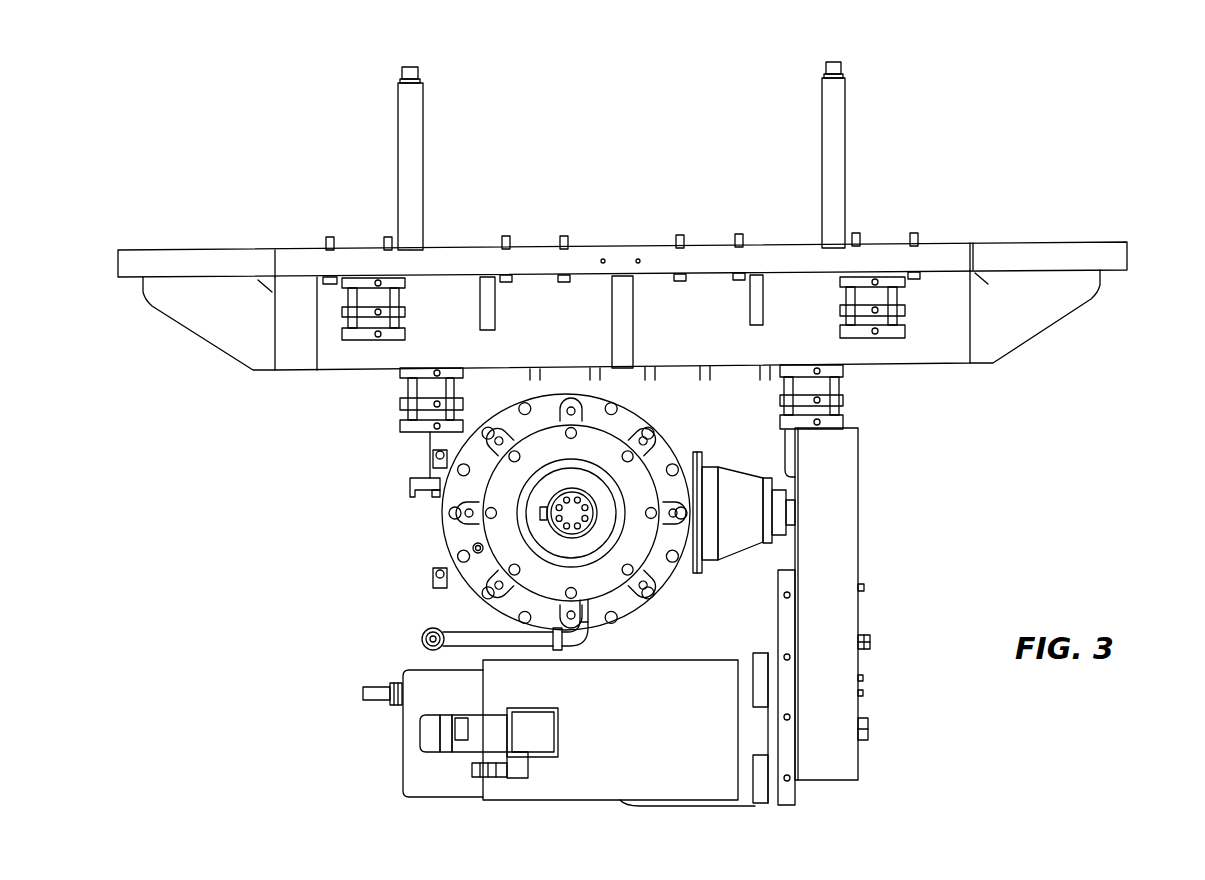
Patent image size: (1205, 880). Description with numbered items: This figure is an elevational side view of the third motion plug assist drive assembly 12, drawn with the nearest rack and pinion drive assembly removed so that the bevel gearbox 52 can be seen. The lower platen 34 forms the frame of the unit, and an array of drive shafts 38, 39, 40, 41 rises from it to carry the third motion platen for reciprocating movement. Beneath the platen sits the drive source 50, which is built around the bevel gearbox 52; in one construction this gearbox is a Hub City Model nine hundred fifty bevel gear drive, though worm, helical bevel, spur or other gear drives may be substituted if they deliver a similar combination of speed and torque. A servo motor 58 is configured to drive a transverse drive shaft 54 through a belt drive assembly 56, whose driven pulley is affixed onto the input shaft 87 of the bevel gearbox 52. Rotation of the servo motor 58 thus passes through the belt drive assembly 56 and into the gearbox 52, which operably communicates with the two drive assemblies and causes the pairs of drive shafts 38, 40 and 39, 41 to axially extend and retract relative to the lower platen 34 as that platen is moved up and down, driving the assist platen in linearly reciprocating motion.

The plug assist drive assembly 12 is at (1135, 123).
The lower platen 34 is at (262, 372).
The drive shaft 38 is at (367, 158).
The drive shaft 39 is at (397, 152).
The drive shaft 40 is at (877, 155).
The drive shaft 41 is at (846, 147).
The drive source 50 is at (388, 547).
The bevel gearbox 52 is at (467, 600).
The transverse drive shaft 54 is at (585, 535).
The belt drive assembly 56 is at (860, 521).
The servo motor 58 is at (432, 797).
The input shaft 87 is at (790, 535).